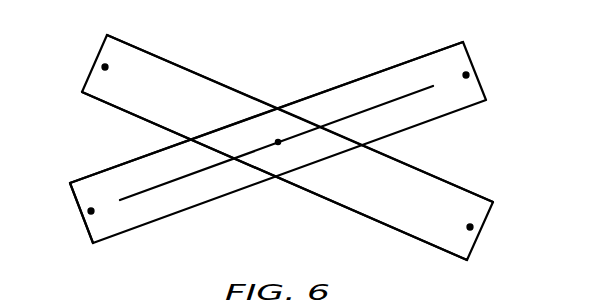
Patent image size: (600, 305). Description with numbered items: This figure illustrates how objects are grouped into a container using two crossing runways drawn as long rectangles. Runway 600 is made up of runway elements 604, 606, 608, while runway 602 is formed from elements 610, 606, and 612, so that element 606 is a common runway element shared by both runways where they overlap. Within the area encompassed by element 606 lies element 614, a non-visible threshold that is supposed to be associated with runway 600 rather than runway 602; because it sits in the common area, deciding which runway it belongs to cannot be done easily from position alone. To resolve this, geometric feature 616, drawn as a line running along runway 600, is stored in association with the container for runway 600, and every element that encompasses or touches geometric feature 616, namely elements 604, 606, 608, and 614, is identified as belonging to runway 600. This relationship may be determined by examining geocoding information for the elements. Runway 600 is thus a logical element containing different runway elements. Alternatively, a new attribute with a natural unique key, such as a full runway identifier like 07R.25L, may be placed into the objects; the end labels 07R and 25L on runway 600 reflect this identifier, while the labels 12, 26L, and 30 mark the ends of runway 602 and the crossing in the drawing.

The runway 600 is at (465, 108).
The runway 602 is at (418, 239).
The runway element 604 is at (97, 185).
The common runway element 606 is at (238, 133).
The runway element 608 is at (420, 70).
The runway element 610 is at (183, 77).
The runway element 612 is at (446, 192).
The threshold 614 is at (281, 143).
The geometric feature 616 is at (155, 190).
The electrode position 12 is at (87, 59).
The runway identifier 25L is at (490, 65).
The electrode position 26L is at (279, 94).
The runway identifier 07R is at (66, 220).
The electrode position 30 is at (489, 235).